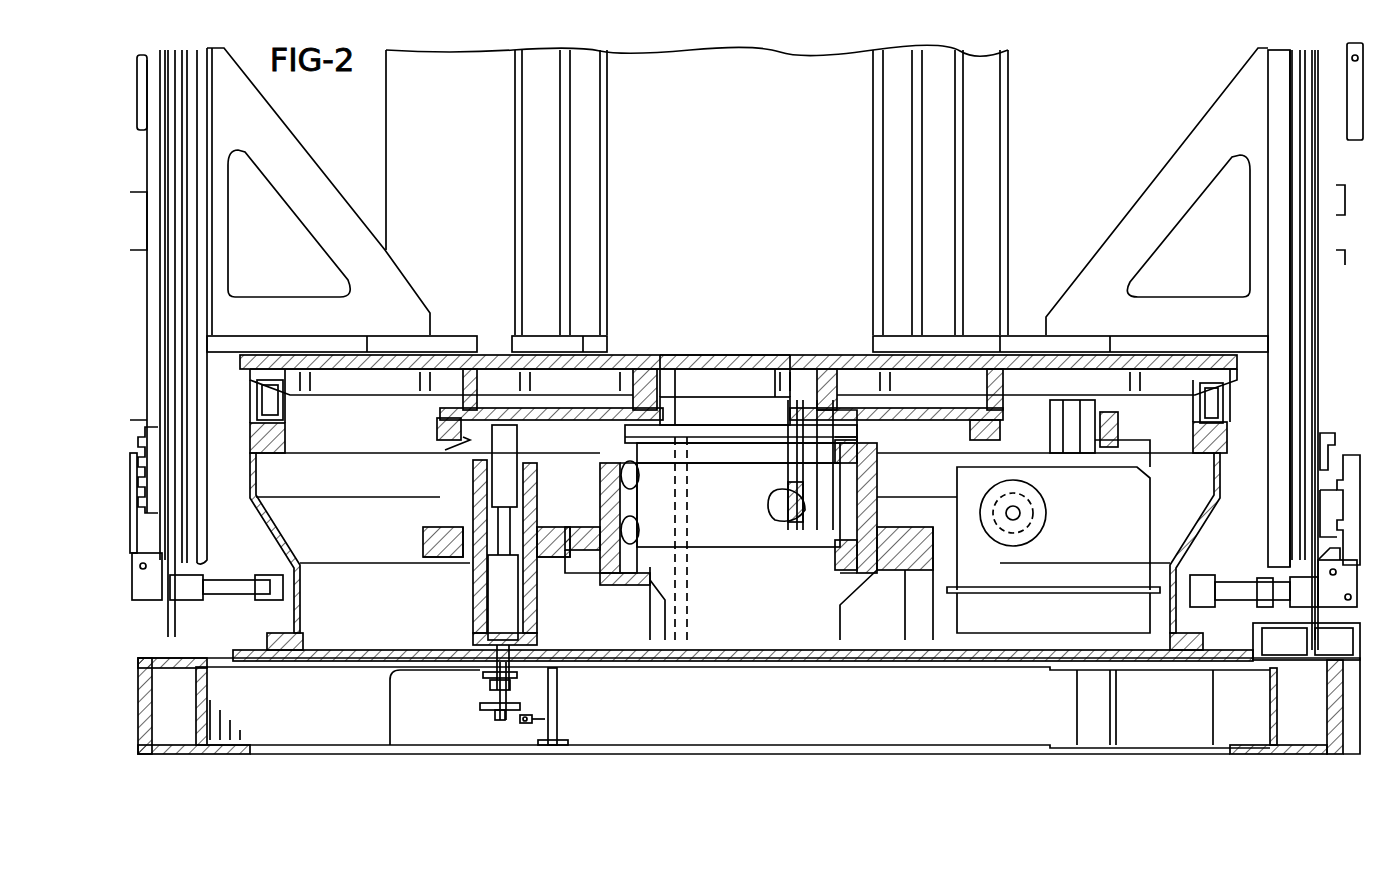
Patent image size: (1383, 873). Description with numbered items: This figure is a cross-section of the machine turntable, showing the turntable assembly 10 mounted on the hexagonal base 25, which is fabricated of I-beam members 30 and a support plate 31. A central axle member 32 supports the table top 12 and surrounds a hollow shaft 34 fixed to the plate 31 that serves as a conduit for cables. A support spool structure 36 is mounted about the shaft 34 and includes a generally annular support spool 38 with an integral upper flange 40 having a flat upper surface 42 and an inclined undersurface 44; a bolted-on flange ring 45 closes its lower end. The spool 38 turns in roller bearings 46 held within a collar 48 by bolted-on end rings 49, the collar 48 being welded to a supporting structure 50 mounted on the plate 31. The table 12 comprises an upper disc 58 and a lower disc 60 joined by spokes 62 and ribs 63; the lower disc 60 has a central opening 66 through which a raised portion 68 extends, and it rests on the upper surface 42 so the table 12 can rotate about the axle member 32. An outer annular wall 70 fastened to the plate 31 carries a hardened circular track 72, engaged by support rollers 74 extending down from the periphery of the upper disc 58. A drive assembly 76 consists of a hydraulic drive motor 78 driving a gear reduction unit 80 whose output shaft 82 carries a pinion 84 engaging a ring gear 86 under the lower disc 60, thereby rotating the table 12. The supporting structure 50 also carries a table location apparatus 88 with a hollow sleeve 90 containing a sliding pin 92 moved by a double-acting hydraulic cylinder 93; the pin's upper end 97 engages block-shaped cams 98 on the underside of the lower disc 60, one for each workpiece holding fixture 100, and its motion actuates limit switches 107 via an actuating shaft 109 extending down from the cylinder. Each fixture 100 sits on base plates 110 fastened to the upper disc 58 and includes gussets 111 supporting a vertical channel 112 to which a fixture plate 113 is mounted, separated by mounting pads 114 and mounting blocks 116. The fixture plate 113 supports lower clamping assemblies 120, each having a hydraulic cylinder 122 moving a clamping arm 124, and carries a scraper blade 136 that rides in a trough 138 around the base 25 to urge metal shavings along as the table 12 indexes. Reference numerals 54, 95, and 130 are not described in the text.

The turntable assembly 10 is at (650, 333).
The table top 12 is at (805, 335).
The hexagonal base 25 is at (785, 712).
The I-beam members 30 is at (210, 755).
The support plate 31 is at (288, 662).
The central axle member 32 is at (722, 362).
The hollow shaft 34 is at (680, 356).
The support spool structure 36 is at (878, 488).
The support spool 38 is at (714, 489).
The upper flange 40 is at (840, 425).
The upper surface 42 is at (846, 388).
The undersurface 44 is at (870, 450).
The flange ring 45 is at (645, 585).
The roller bearings 46 is at (636, 470).
The collar 48 is at (600, 512).
The end rings 49 is at (862, 445).
The supporting structure 50 is at (590, 494).
The lower bearing 54 is at (636, 540).
The upper disc 58 is at (618, 355).
The lower disc 60 is at (495, 410).
The spokes 62 is at (370, 389).
The ribs 63 is at (463, 385).
The central opening 66 is at (670, 418).
The raised portion 68 is at (710, 412).
The outer annular wall 70 is at (278, 533).
The circular track 72 is at (250, 430).
The support rollers 74 is at (257, 397).
The drive assembly 76 is at (1147, 471).
The hydraulic drive motor 78 is at (1045, 534).
The gear reduction unit 80 is at (1125, 524).
The output shaft 82 is at (1075, 445).
The pinion 84 is at (1125, 430).
The ring gear 86 is at (437, 428).
The table location apparatus 88 is at (423, 529).
The hollow sleeve 90 is at (470, 565).
The sliding pin 92 is at (473, 491).
The double-acting hydraulic cylinder 93 is at (520, 593).
The cylinder end cap 95 is at (537, 633).
The upper end 97 is at (455, 445).
The cams 98 is at (520, 431).
The workpiece holding fixtures 100 is at (306, 135).
The limit switches 107 is at (557, 689).
The actuating shaft 109 is at (480, 693).
The base plates 110 is at (533, 340).
The gussets 111 is at (318, 178).
The vertical channel 112 is at (200, 310).
The fixture plate 113 is at (173, 218).
The mounting pads 114 is at (1305, 330).
The mounting blocks 116 is at (1282, 300).
The lower clamping assemblies 120 is at (185, 600).
The double-acting hydraulic cylinder 122 is at (227, 577).
The clamping arm 124 is at (145, 68).
The guide block 130 is at (147, 195).
The scraper blade 136 is at (1296, 660).
The trough 138 is at (1256, 660).